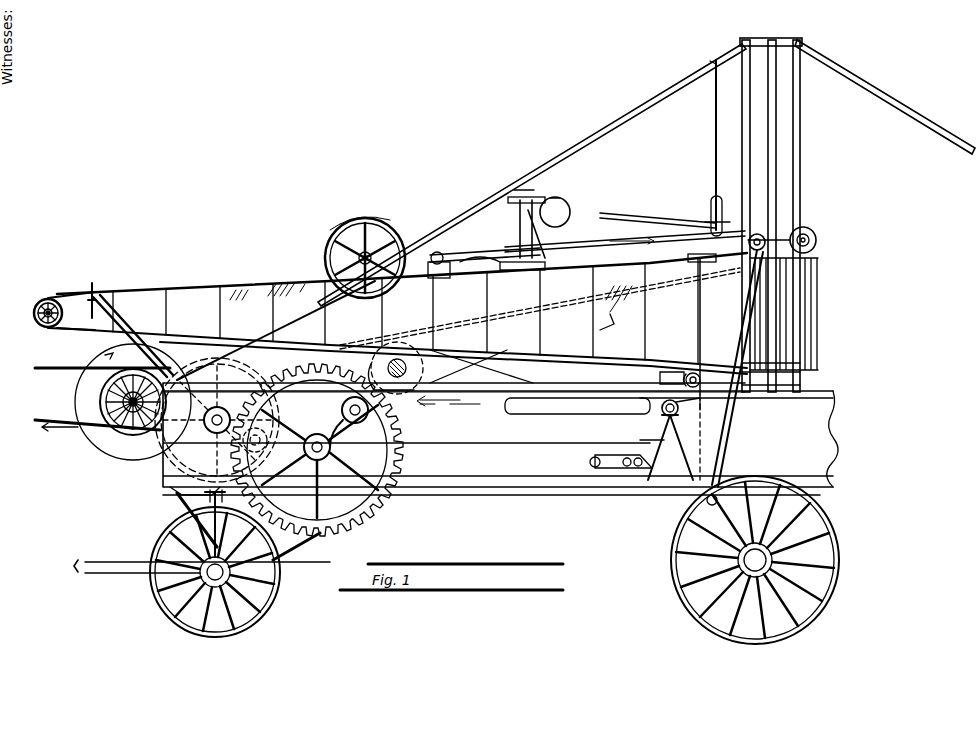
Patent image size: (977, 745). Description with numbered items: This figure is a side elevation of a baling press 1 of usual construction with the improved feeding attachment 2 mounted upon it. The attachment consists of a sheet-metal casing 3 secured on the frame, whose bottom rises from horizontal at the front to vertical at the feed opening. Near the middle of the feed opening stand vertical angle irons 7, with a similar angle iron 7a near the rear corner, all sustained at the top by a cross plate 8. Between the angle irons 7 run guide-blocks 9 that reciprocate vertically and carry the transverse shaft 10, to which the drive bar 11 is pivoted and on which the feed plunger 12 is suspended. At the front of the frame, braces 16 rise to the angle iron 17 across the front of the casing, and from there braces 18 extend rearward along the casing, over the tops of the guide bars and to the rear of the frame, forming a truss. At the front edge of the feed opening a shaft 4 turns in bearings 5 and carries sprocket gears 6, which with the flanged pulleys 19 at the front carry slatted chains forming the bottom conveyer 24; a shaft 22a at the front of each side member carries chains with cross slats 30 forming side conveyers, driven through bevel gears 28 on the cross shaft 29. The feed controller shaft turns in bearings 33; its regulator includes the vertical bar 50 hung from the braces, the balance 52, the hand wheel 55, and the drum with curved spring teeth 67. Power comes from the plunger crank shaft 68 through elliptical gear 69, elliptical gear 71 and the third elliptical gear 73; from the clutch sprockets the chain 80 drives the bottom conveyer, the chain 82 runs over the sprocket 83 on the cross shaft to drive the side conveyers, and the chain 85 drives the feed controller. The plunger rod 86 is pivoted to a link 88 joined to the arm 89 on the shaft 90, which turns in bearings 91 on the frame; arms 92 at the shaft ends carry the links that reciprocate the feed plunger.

The baling press 1 is at (808, 398).
The feeding attachment 2 is at (306, 290).
The casing 3 is at (180, 302).
The shaft 4 is at (672, 371).
The bearings 5 is at (686, 382).
The sprocket gears 6 is at (692, 362).
The vertical angle irons 7 is at (770, 65).
The angle iron 7a is at (800, 132).
The cross plate 8 is at (765, 45).
The guide-blocks 9 is at (762, 234).
The transverse shaft 10 is at (745, 230).
The drive bar 11 is at (730, 443).
The feed plunger 12 is at (700, 220).
The braces 16 is at (122, 340).
The angle iron 17 is at (90, 290).
The braces 18 is at (880, 97).
The flanged pulleys 19 is at (48, 326).
The shaft 22a is at (46, 302).
The conveyer 24 is at (558, 365).
The bevel gears 28 is at (815, 258).
The shaft 29 is at (816, 240).
The cross slats 30 is at (433, 312).
The bearings 33 is at (468, 252).
The vertical bar 50 is at (716, 128).
The balance 52 is at (566, 206).
The hand wheel 55 is at (526, 219).
The curved spring teeth 67 is at (372, 220).
The plunger crank shaft 68 is at (322, 462).
The elliptical gear 69 is at (294, 478).
The elliptical gear 71 is at (340, 413).
The elliptical gear 73 is at (400, 378).
The chain 80 is at (450, 404).
The chain 82 is at (500, 318).
The sprocket 83 is at (812, 229).
The chain 85 is at (584, 249).
The plunger rod 86 is at (634, 452).
The link 88 is at (621, 464).
The arm 89 is at (656, 444).
The shaft 90 is at (660, 408).
The bearings 91 is at (688, 400).
The arm 92 is at (700, 498).